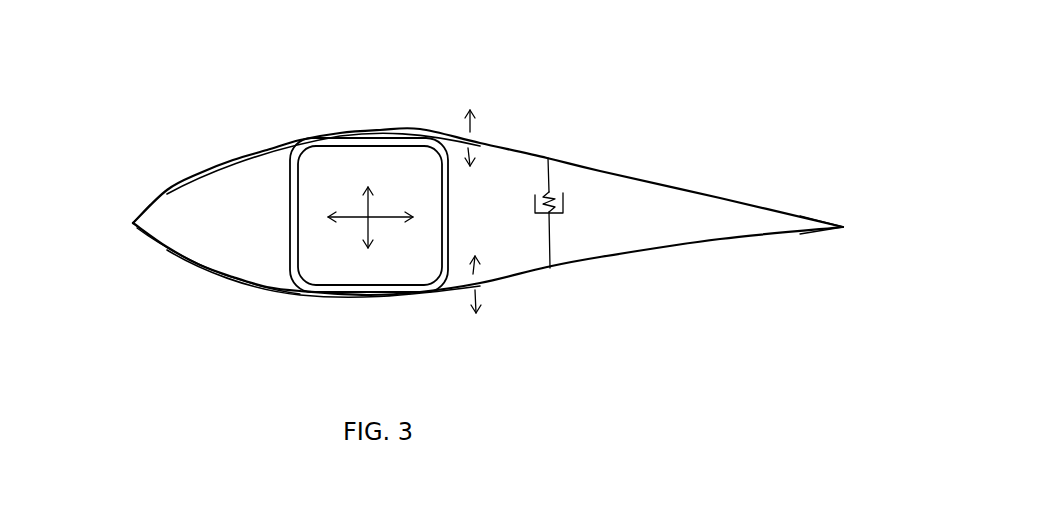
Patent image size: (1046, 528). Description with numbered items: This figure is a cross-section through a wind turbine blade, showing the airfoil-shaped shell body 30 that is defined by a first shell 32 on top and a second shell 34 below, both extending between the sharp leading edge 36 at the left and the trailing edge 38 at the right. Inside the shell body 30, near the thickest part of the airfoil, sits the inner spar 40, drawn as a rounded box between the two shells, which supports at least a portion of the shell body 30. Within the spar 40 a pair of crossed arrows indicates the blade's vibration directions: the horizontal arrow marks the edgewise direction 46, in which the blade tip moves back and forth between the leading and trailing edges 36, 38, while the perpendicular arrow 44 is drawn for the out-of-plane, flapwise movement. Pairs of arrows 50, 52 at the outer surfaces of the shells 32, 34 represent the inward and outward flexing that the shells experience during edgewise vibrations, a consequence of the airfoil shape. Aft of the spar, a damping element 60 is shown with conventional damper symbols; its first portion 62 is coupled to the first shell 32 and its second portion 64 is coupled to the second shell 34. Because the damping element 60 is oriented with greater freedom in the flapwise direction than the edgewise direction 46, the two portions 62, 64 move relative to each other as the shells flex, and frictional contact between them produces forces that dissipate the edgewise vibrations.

The shell body 30 is at (226, 160).
The first shell 32 is at (283, 143).
The second shell 34 is at (237, 283).
The leading edge 36 is at (133, 225).
The trailing edge 38 is at (843, 227).
The inner spar 40 is at (292, 210).
The flapwise direction 44 is at (371, 234).
The edgewise direction 46 is at (379, 207).
The arrow representing flexing movement 50 is at (483, 211).
The arrow representing flexing movement 52 is at (483, 213).
The damping element 60 is at (573, 197).
The first portion 62 is at (548, 172).
The second portion 64 is at (552, 250).